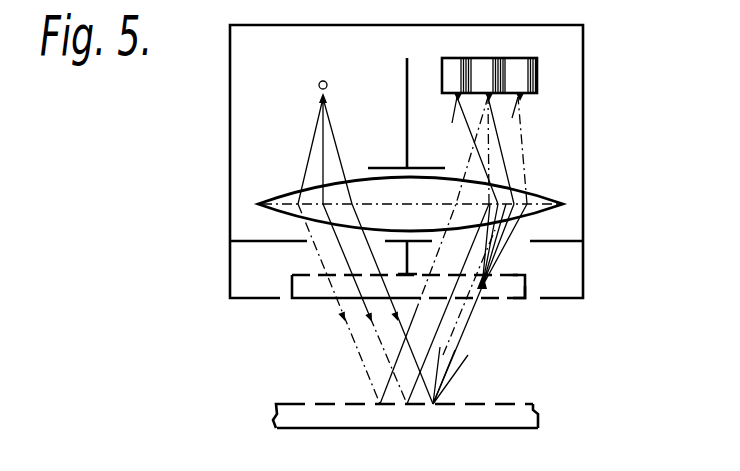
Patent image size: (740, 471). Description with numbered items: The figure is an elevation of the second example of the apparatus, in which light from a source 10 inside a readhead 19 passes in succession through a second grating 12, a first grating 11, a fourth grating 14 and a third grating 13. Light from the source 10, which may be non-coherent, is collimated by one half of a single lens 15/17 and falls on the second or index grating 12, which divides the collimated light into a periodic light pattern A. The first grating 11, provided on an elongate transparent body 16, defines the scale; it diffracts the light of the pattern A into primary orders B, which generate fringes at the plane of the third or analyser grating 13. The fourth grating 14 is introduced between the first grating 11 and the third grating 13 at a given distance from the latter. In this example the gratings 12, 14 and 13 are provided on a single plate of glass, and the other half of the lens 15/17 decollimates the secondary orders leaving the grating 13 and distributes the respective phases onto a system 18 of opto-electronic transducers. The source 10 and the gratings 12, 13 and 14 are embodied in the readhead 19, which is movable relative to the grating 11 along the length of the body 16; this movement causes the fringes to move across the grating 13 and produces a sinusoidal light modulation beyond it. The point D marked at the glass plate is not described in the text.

The light source 10 is at (320, 81).
The first grating 11 is at (522, 404).
The second grating 12 is at (297, 275).
The third grating 13 is at (517, 275).
The fourth grating 14 is at (517, 300).
The lens 15 is at (351, 180).
The lens 17 is at (266, 198).
The elongate transparent body 16 is at (398, 407).
The system of opto-electronic transducers 18 is at (546, 78).
The readhead 19 is at (583, 139).
The periodic light pattern A is at (338, 309).
The primary orders B is at (451, 382).
The focal point D is at (483, 289).